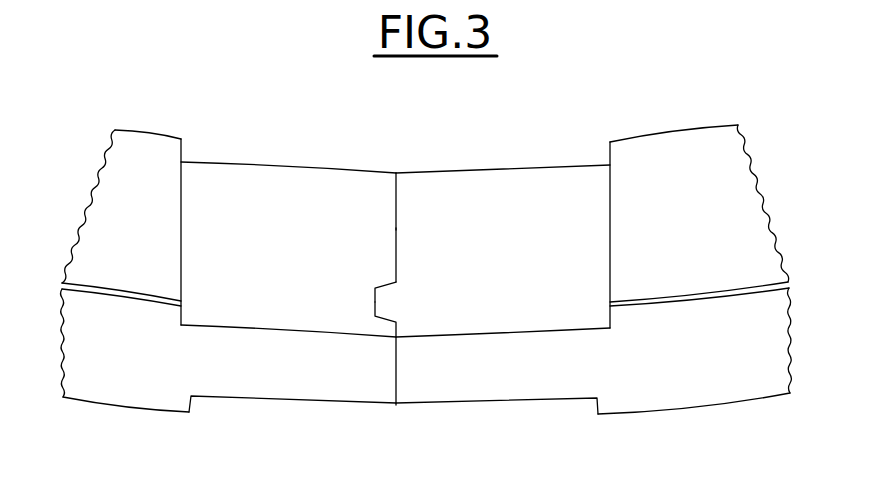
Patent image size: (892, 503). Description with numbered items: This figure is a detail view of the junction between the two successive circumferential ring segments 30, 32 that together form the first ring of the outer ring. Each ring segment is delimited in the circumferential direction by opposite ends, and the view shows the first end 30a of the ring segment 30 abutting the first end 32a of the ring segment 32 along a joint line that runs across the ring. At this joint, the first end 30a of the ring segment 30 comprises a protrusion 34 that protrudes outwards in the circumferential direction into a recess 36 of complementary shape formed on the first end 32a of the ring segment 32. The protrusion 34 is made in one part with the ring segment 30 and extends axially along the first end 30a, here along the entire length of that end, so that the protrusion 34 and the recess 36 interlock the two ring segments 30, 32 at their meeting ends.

The ring segment 30 is at (506, 190).
The first end of ring segment 30a is at (396, 227).
The ring segment 32 is at (286, 190).
The first end of ring segment 32a is at (396, 216).
The protrusion 34 is at (387, 311).
The recess 36 is at (375, 300).